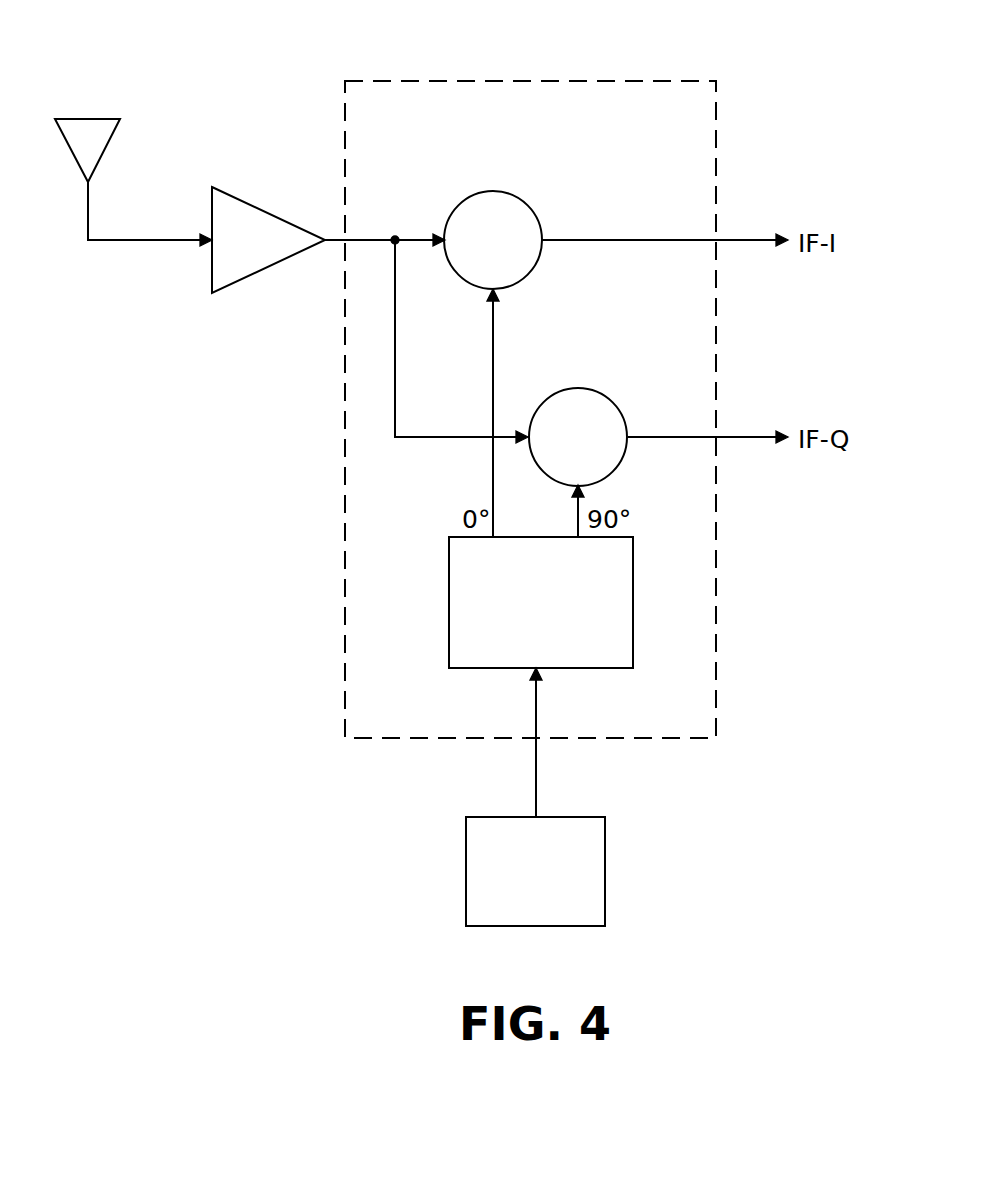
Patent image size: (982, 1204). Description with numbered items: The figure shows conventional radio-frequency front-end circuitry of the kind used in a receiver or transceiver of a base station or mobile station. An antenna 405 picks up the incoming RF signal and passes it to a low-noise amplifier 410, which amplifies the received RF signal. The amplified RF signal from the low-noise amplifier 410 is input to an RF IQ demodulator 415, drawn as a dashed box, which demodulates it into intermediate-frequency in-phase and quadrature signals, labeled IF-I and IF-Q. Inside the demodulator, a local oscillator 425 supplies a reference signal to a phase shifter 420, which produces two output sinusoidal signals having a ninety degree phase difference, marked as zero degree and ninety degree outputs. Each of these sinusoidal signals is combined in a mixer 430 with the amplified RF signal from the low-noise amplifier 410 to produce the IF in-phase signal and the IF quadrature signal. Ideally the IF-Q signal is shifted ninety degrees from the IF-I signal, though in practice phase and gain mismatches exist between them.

The antenna 405 is at (88, 118).
The low-noise amplifier (LNA) 410 is at (268, 210).
The RF IQ demodulator 415 is at (527, 80).
The phase shifter 420 is at (449, 600).
The local oscillator (LO) 425 is at (466, 868).
The mixer 430 is at (537, 267).